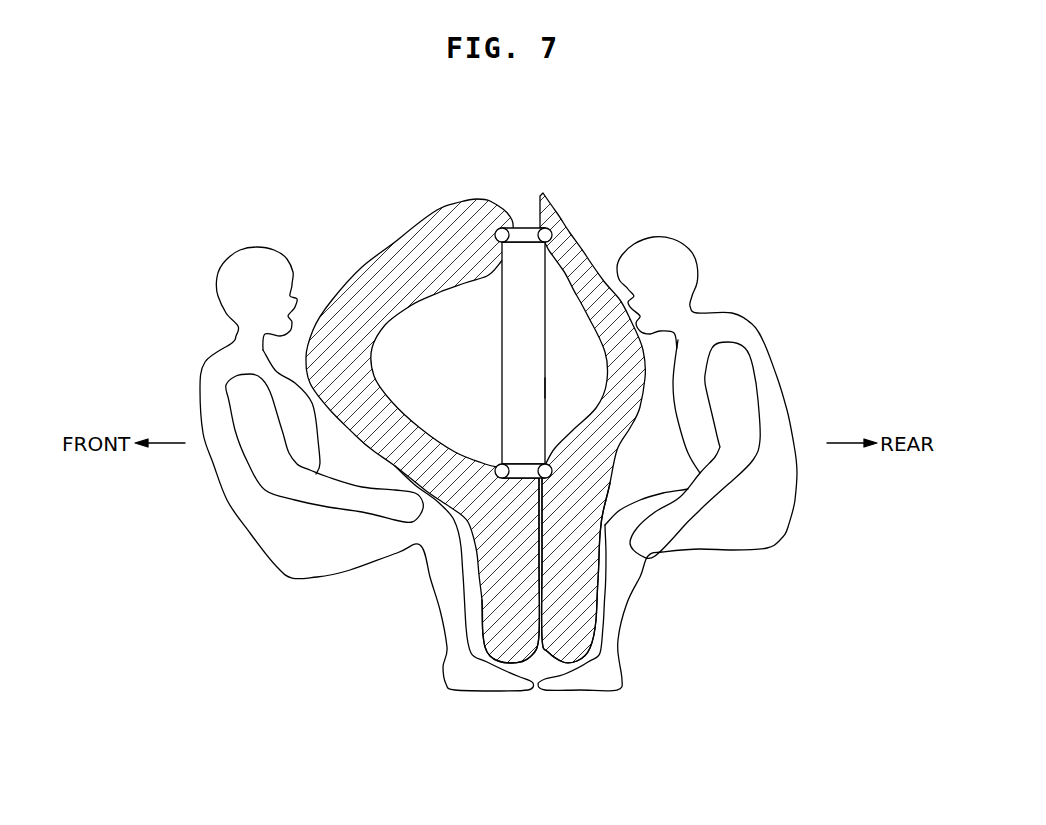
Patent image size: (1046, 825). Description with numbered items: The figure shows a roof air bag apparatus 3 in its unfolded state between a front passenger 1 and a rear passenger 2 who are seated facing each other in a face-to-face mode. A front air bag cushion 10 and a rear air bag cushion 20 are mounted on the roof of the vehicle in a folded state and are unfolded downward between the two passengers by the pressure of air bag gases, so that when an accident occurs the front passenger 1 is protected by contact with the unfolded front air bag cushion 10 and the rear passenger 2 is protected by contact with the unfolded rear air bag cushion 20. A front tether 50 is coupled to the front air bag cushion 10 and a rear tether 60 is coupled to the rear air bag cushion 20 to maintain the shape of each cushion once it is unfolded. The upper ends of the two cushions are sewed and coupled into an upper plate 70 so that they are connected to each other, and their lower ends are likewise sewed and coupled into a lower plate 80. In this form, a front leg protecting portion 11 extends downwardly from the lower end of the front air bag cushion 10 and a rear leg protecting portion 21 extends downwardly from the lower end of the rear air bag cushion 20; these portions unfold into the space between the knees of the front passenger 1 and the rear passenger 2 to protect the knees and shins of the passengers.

The front passenger 1 is at (238, 497).
The rear passenger 2 is at (777, 403).
The roof air bag apparatus 3 is at (363, 453).
The front air bag cushion 10 is at (418, 249).
The front leg protecting portion 11 is at (520, 640).
The rear air bag cushion 20 is at (573, 257).
The rear leg protecting portion 21 is at (578, 623).
The front tether 50 is at (497, 320).
The rear tether 60 is at (547, 388).
The upper plate 70 is at (522, 228).
The lower plate 80 is at (520, 472).